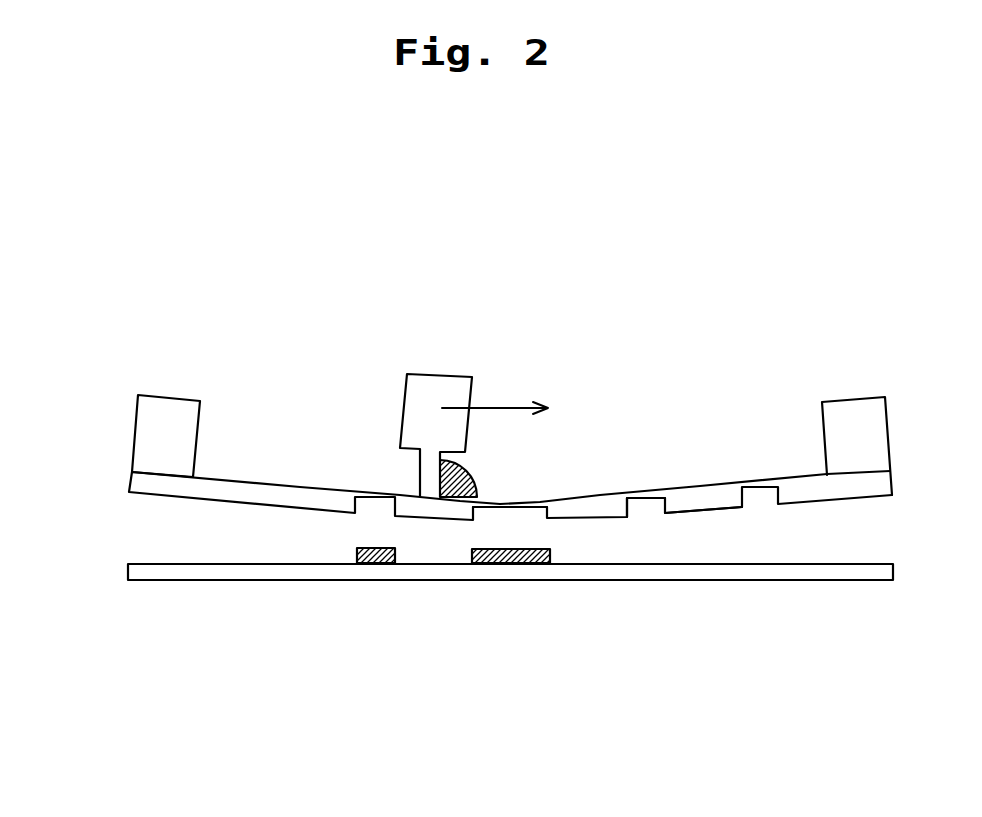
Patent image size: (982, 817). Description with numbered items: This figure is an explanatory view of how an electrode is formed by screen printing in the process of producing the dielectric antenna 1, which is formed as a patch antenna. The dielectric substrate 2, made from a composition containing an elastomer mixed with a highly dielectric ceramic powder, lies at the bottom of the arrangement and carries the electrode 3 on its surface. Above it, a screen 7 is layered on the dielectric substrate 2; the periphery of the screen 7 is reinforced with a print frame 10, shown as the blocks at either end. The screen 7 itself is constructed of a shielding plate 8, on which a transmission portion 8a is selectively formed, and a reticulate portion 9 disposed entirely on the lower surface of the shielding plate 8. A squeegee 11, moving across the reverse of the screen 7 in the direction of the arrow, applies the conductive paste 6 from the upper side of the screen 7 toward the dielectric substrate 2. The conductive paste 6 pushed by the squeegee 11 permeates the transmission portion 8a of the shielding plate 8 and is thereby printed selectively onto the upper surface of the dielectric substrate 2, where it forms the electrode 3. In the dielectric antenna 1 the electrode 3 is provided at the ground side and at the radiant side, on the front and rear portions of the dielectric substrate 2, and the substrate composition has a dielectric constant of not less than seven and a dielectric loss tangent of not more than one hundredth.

The dielectric antenna 1 is at (474, 616).
The dielectric substrate 2 is at (510, 615).
The electrode 3 is at (409, 616).
The conductive paste 6 is at (521, 445).
The screen 7 is at (745, 412).
The shielding plate 8 is at (510, 427).
The transmission portion 8a is at (620, 533).
The reticulate portion 9 is at (661, 415).
The print frame 10 is at (503, 375).
The squeegee 11 is at (474, 366).